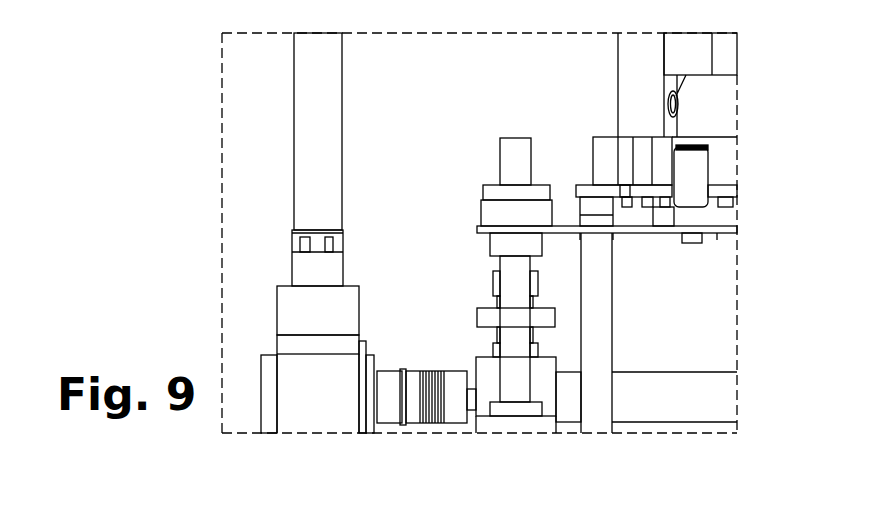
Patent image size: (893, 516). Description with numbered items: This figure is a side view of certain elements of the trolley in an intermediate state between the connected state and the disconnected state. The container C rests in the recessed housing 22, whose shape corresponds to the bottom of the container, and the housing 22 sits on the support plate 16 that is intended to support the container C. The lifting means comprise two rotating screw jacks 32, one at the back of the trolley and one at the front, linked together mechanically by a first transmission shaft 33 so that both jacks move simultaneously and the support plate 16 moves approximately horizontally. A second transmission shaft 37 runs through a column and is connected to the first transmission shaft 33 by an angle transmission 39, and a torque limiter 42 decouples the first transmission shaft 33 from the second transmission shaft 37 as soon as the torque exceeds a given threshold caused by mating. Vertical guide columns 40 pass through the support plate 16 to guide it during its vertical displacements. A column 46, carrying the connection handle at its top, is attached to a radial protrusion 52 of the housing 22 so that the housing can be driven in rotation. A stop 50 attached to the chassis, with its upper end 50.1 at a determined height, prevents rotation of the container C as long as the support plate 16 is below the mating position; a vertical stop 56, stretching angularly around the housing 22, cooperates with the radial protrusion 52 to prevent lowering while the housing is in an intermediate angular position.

The support plate 16 is at (717, 231).
The recessed housing 22 is at (737, 160).
The rotating screw jack 32 is at (497, 284).
The first transmission shaft 33 is at (703, 396).
The second transmission shaft 37 is at (313, 106).
The angle transmission 39 is at (295, 314).
The guide column 40 is at (513, 162).
The torque limiter 42 is at (413, 387).
The column 46 is at (645, 80).
The stop 50 is at (600, 306).
The upper end of the stop 50.1 is at (605, 193).
The radial protrusion 52 is at (579, 146).
The vertical stop 56 is at (576, 208).
The container C is at (723, 45).